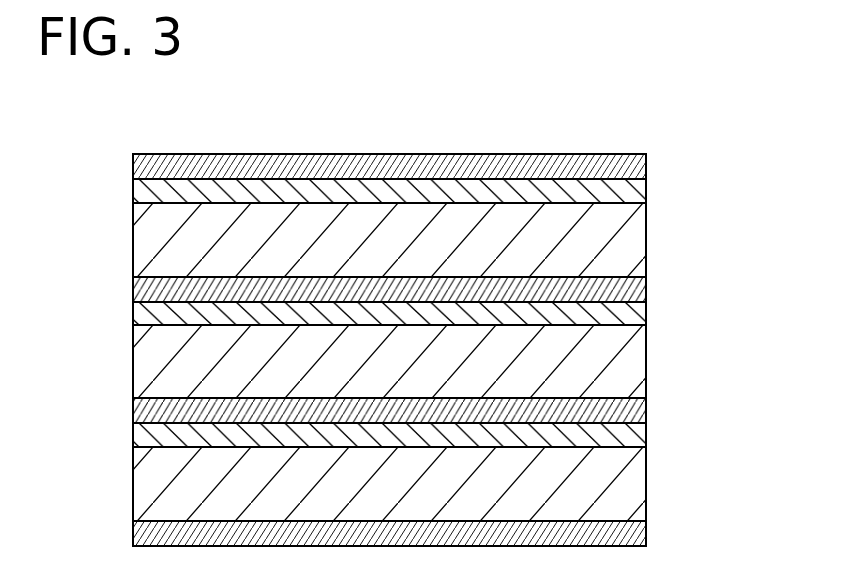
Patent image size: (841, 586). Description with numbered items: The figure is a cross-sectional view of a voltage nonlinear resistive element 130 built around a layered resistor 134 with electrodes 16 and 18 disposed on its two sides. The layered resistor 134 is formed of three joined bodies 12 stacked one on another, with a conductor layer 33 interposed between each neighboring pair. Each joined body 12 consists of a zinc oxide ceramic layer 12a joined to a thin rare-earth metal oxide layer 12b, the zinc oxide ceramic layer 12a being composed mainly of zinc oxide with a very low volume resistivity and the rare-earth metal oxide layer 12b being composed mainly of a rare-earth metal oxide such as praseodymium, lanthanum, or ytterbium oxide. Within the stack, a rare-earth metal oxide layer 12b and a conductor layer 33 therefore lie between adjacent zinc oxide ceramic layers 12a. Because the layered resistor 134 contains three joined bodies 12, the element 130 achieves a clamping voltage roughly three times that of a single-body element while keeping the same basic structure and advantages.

The voltage nonlinear resistive element 130 is at (636, 128).
The layered resistor 134 is at (122, 203).
The joined body 12 is at (743, 180).
The zinc oxide ceramic layer 12a is at (633, 255).
The rare-earth metal oxide layer 12b is at (635, 190).
The conductor layer 33 is at (648, 285).
The electrode 18 is at (635, 168).
The electrode 16 is at (635, 533).